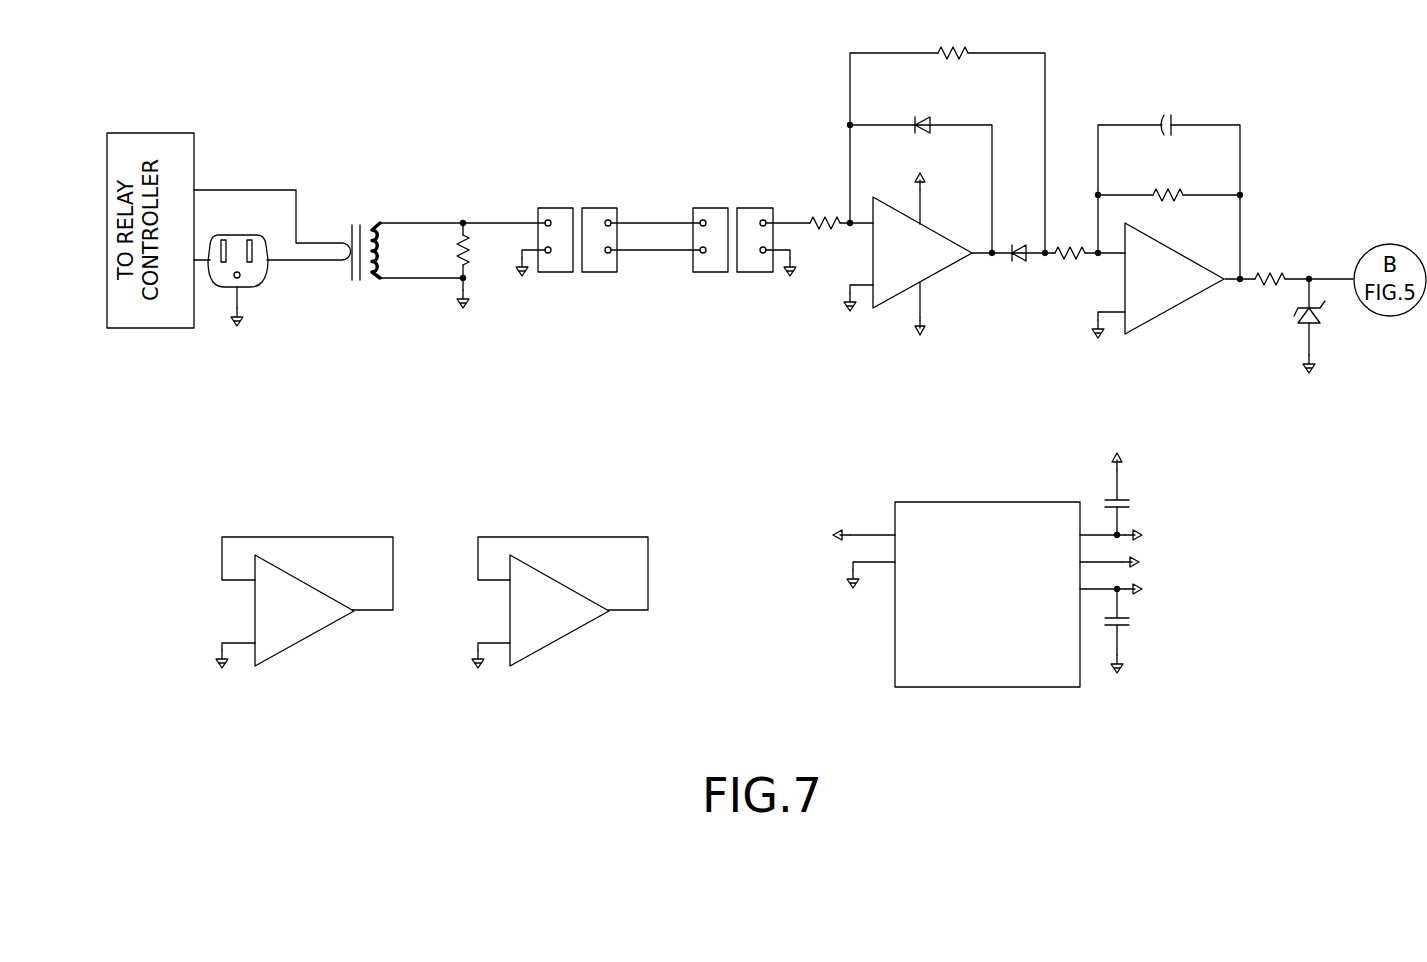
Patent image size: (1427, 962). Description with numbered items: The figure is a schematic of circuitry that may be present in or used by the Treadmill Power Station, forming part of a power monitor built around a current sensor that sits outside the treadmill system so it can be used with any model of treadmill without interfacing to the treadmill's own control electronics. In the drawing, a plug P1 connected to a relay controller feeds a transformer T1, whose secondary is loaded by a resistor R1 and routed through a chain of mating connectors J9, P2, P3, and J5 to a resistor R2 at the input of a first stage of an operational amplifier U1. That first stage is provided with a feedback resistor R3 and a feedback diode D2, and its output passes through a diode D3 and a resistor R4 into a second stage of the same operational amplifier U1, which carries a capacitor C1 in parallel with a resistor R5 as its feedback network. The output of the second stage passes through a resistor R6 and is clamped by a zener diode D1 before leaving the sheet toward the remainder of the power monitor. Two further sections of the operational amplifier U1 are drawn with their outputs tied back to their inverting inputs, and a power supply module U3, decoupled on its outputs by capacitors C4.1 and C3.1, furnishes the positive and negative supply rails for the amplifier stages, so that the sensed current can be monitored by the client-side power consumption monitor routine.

The AC power plug P1 is at (238, 268).
The transformer AC1020 T1 is at (360, 221).
The resistor 100 ohm R1 is at (463, 235).
The connector J9 is at (544, 227).
The connector P2 is at (599, 225).
The connector P3 is at (710, 225).
The connector J5 is at (766, 227).
The resistor 3K R2 is at (825, 197).
The LM324 operational amplifier U1 is at (735, 409).
The feedback resistor 3K R3 is at (947, 126).
The diode 1N4148 D2 is at (921, 159).
The diode 1N4138 D3 is at (1020, 282).
The resistor 3K R4 is at (1090, 228).
The capacitor 2.2UF C1 is at (1169, 171).
The resistor 36K R5 is at (1169, 169).
The resistor 100 ohm R6 is at (1300, 255).
The zener diode 1N5226B D1 is at (1309, 354).
The op amp supply RB-0512D U3 is at (993, 601).
The capacitor C4.1 is at (1148, 494).
The capacitor C3.1 is at (1148, 631).